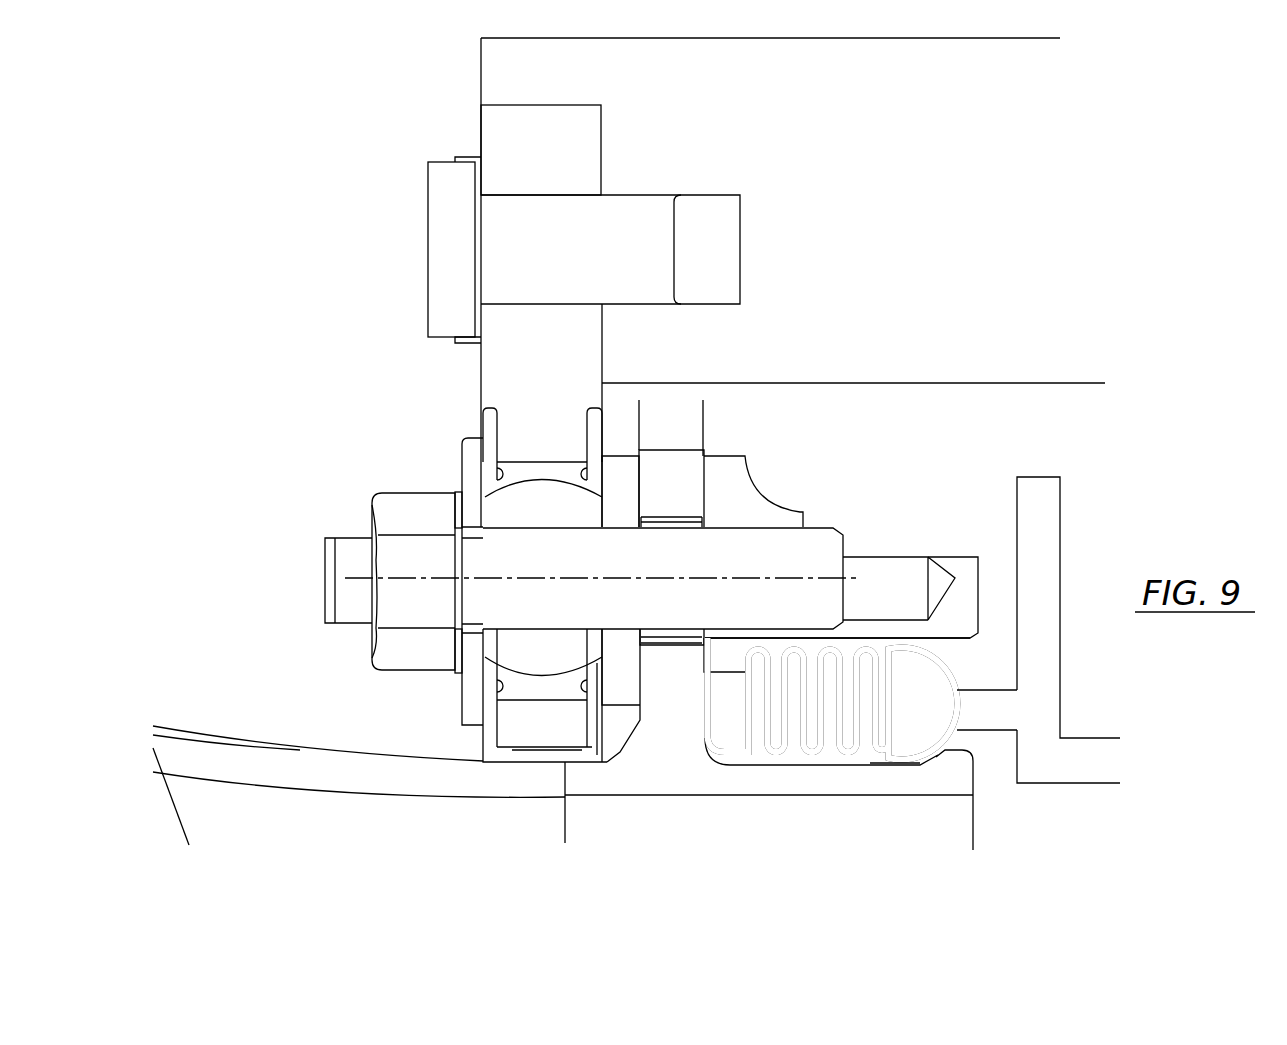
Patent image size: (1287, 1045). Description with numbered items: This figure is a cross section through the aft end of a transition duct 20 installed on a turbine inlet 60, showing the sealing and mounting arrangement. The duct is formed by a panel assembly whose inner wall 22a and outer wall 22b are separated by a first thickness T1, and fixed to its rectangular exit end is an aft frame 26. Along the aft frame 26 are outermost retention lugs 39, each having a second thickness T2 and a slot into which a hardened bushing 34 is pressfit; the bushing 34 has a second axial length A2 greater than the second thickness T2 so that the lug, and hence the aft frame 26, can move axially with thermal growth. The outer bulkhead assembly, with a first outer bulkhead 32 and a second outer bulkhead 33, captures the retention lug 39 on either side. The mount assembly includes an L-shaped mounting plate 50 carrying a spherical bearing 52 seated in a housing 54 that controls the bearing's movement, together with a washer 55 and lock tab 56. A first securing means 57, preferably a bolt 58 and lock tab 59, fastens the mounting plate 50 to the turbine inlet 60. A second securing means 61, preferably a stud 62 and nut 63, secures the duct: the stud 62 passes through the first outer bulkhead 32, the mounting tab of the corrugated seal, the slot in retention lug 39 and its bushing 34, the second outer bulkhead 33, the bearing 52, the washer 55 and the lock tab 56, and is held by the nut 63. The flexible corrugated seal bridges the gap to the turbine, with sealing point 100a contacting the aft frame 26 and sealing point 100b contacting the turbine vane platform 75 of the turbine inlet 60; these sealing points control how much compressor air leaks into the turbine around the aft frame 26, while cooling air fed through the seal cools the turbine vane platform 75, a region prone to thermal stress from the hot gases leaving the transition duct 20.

The transition duct 20 is at (208, 708).
The inner wall 22a is at (715, 797).
The outer wall 22b is at (865, 765).
The aft frame 26 is at (935, 778).
The first outer bulkhead 32 is at (730, 508).
The second outer bulkhead 33 is at (623, 501).
The bushing 34 is at (670, 528).
The outermost retention lug 39 is at (673, 495).
The mounting plate 50 is at (544, 372).
The spherical bearing 52 is at (545, 516).
The housing 54 is at (525, 477).
The washer 55 is at (472, 460).
The lock tab 56 is at (456, 492).
The first means for securing 57 is at (384, 176).
The bolt 58 is at (443, 302).
The lock tab 59 is at (465, 156).
The turbine inlet 60 is at (831, 258).
The second securing means 61 is at (338, 526).
The stud 62 is at (820, 542).
The nut 63 is at (417, 524).
The turbine vane platform 75 is at (1065, 775).
The sealing point 100a is at (893, 768).
The sealing point 100b is at (956, 716).
The second axial length A2 is at (702, 409).
The second thickness T2 is at (702, 433).
The first thickness T1 is at (797, 767).